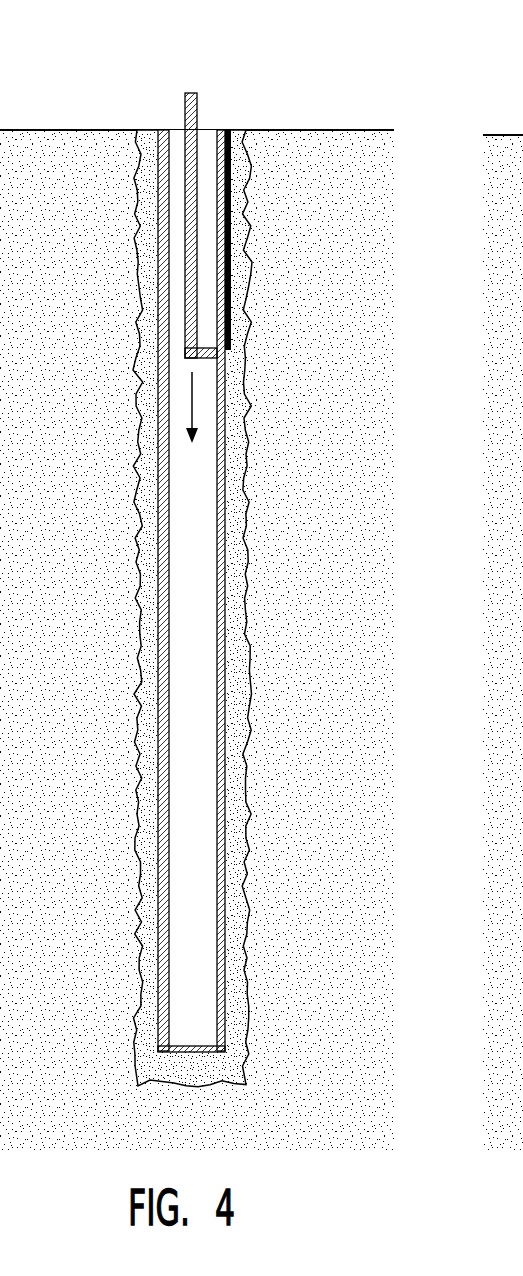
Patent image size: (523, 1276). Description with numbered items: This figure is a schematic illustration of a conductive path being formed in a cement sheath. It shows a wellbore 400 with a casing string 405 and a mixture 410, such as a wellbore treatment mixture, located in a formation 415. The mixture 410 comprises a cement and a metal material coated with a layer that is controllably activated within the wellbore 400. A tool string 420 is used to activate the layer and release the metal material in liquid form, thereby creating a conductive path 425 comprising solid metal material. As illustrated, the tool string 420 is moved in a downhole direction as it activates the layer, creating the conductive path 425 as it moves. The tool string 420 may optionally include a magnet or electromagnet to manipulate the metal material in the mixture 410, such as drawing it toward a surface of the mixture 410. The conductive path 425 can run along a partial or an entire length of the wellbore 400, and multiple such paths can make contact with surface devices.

The wellbore 400 is at (213, 527).
The casing string 405 is at (163, 130).
The mixture 410 is at (250, 787).
The formation 415 is at (482, 780).
The tool string 420 is at (192, 95).
The conductive path 425 is at (227, 272).